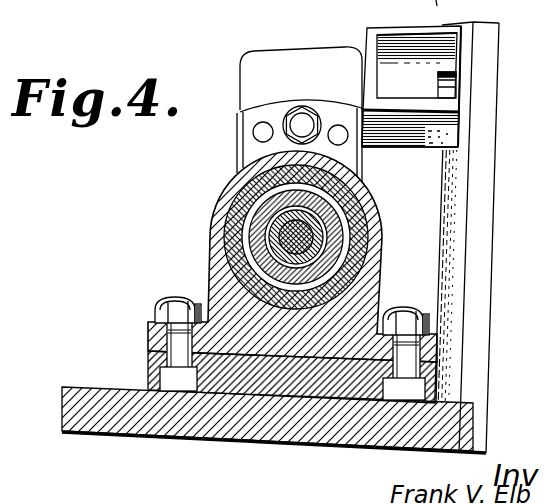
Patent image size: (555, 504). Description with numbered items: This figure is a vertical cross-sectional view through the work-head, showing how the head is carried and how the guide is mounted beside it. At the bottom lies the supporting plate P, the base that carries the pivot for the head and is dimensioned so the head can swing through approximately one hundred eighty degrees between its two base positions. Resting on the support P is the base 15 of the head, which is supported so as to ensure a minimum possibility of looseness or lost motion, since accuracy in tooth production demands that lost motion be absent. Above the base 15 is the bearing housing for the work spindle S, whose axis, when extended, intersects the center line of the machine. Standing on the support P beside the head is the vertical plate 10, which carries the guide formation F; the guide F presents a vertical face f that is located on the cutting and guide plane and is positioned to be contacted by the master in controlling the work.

The vertical face f is at (366, 55).
The vertical plate 10 is at (485, 75).
The guide formation F is at (401, 132).
The work spindle S is at (296, 237).
The supporting plate P is at (203, 420).
The base of the head 15 is at (334, 383).